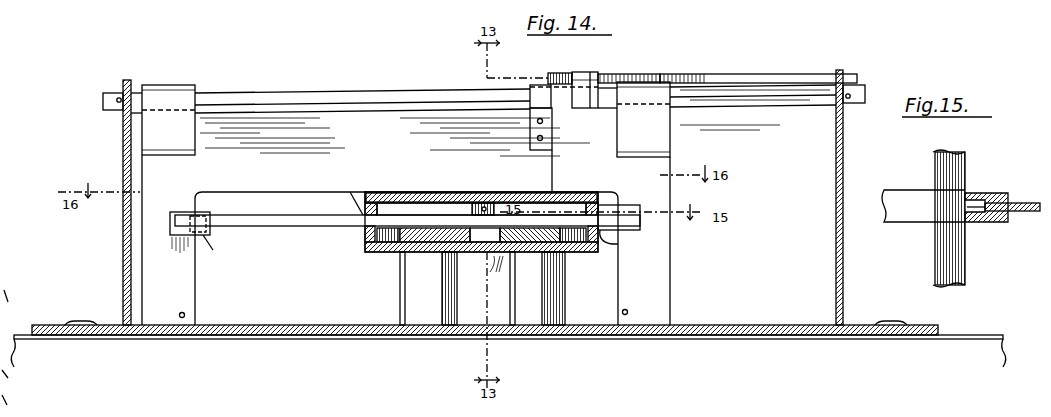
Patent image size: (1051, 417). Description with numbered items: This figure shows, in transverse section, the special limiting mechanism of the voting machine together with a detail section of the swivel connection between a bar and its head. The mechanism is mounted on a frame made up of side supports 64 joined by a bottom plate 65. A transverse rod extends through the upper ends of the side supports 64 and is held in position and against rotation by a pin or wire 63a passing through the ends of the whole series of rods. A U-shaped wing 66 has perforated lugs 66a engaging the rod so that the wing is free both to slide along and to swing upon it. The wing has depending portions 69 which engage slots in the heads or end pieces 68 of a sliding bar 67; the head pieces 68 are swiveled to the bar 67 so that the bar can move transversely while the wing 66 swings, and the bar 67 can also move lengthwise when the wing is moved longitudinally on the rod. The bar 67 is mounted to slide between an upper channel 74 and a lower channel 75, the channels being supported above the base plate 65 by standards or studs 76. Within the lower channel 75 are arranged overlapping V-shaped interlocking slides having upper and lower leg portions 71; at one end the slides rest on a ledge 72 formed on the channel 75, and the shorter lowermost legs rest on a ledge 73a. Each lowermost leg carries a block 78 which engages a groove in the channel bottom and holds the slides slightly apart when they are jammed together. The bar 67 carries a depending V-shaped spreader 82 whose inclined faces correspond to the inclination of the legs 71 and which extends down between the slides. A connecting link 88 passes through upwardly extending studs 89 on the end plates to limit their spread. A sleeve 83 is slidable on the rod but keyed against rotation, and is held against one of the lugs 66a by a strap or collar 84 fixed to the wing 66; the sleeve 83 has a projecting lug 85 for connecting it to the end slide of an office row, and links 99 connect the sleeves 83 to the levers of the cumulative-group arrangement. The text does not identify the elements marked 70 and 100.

In FIG. 14, the pin or wire 63a is at (117, 98).
In FIG. 14, the side supports 64 is at (123, 165).
In FIG. 14, the bottom plate 65 is at (757, 325).
In FIG. 14, the U-shaped wings 66 is at (484, 120).
In FIG. 14, the perforated lugs 66a is at (174, 99).
In FIG. 14, the sliding bars 67 is at (290, 228).
In FIG. 15, the sliding bars 67 is at (915, 208).
In FIG. 14, the heads or end pieces 68 is at (185, 212).
In FIG. 15, the heads or end pieces 68 is at (979, 193).
In FIG. 14, the depending portions 69 is at (181, 281).
In FIG. 15, the depending portions 69 is at (1028, 203).
In FIG. 14, the pivot screw 70 is at (186, 315).
In FIG. 14, the leg portions 71 is at (528, 285).
In FIG. 14, the ledge 72 is at (365, 243).
In FIG. 14, the ledge 73a is at (583, 250).
In FIG. 14, the channel 74 is at (412, 192).
In FIG. 14, the channel 75 is at (381, 255).
In FIG. 15, the channel 75 is at (968, 248).
In FIG. 14, the standards or studs 76 is at (512, 307).
In FIG. 14, the block 78 is at (472, 288).
In FIG. 14, the depending spreader 82 is at (481, 209).
In FIG. 14, the sleeve 83 is at (609, 95).
In FIG. 14, the strap or collar 84 is at (530, 97).
In FIG. 14, the projecting lug 85 is at (586, 72).
In FIG. 14, the connecting link 88 is at (485, 203).
In FIG. 14, the studs 89 is at (470, 210).
In FIG. 14, the links 99 is at (737, 74).
In FIG. 14, the nut 100 is at (552, 74).